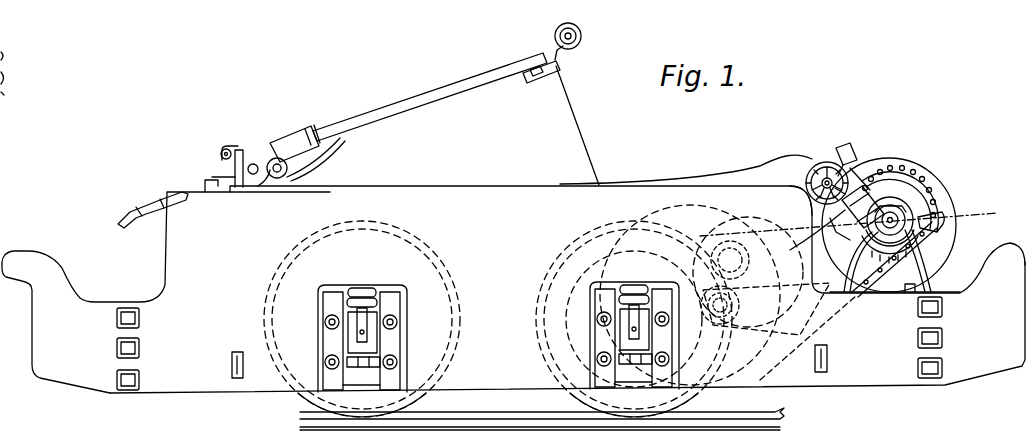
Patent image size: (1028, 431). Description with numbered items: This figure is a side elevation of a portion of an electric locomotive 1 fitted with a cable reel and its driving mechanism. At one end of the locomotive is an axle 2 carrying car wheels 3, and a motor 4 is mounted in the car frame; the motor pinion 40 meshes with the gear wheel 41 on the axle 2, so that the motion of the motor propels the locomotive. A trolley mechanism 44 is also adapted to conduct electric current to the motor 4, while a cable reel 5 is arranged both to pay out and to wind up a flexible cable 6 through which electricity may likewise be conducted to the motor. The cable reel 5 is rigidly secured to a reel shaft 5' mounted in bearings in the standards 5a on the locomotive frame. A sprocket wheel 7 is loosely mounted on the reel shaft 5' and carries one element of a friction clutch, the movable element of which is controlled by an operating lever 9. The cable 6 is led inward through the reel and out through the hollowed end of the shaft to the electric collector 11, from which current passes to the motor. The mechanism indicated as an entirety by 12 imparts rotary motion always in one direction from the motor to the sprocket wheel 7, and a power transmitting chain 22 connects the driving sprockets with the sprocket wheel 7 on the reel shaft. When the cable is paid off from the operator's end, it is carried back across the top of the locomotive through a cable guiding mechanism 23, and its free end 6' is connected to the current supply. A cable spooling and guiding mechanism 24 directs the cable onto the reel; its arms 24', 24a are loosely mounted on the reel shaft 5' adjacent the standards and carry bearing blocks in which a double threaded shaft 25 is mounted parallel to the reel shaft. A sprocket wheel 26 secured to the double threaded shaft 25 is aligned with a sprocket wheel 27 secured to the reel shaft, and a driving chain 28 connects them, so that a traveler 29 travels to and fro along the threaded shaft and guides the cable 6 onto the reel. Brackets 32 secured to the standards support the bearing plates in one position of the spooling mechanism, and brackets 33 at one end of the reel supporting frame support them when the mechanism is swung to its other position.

The electric locomotive 1 is at (480, 262).
The axle 2 is at (588, 326).
The car wheels 3 is at (470, 397).
The motor 4 is at (688, 260).
The cable reel 5 is at (903, 225).
The reel shaft 5' is at (921, 200).
The standards 5a is at (940, 280).
The flexible cable 6 is at (686, 164).
The free end of the cable 6' is at (153, 201).
The sprocket wheel 7 is at (842, 228).
The operating lever 9 is at (898, 206).
The electric collector 11 is at (719, 322).
The one-direction driving mechanism 12 is at (763, 283).
The power transmitting chain 22 is at (896, 172).
The cable guiding mechanism 23 is at (242, 150).
The cable spooling and guiding mechanism 24 is at (841, 150).
The arm 24' is at (875, 160).
The arm 24a is at (931, 424).
The double threaded shaft 25 is at (812, 192).
The sprocket wheel 26 is at (822, 175).
The sprocket wheel 27 is at (940, 237).
The driving chain 28 is at (866, 248).
The traveler 29 is at (849, 168).
The brackets 32 is at (857, 217).
The brackets 33 is at (742, 200).
The motor pinion 40 is at (732, 282).
The gear wheel 41 is at (498, 319).
The trolley mechanism 44 is at (459, 68).